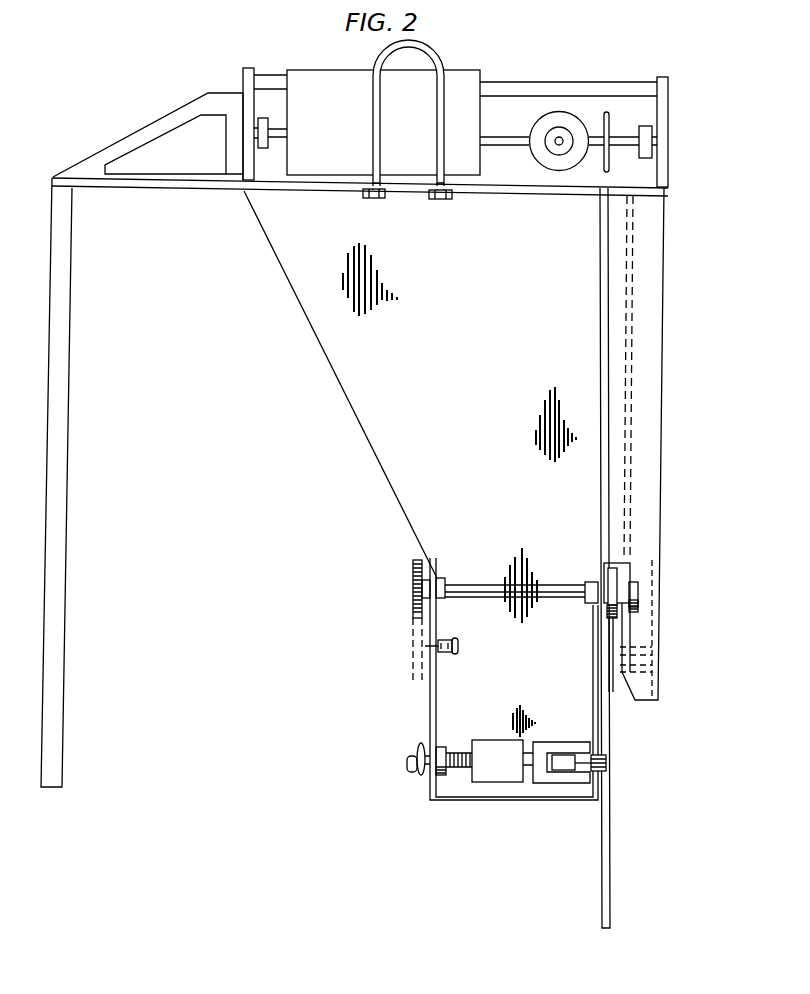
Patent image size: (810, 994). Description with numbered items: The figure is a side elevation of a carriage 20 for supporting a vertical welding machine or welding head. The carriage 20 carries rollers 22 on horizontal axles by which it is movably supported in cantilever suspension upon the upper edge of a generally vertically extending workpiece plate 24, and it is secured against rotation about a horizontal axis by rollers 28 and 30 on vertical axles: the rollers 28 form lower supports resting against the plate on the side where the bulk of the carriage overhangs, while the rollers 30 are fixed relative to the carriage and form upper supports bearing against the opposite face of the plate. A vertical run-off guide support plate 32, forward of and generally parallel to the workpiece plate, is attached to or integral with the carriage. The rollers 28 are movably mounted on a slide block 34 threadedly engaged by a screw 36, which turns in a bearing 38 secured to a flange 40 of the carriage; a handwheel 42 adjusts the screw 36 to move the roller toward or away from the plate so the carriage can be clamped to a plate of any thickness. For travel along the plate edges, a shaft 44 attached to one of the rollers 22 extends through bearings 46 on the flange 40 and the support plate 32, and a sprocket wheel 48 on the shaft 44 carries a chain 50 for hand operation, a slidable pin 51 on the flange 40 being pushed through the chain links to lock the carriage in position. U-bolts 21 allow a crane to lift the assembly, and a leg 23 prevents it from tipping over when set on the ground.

The carriage 20 is at (488, 338).
The U-bolts 21 is at (441, 63).
The rollers 22 is at (614, 581).
The leg 23 is at (47, 545).
The workpiece plate 24 is at (607, 899).
The rollers 28 is at (608, 766).
The rollers 30 is at (650, 660).
The run-off guide support plate 32 is at (630, 408).
The slide block 34 is at (510, 780).
The screw 36 is at (460, 753).
The bearing 38 is at (441, 776).
The flange 40 is at (438, 694).
The handwheel 42 is at (407, 760).
The shaft 44 is at (553, 593).
The bearings 46 is at (441, 581).
The sprocket wheel 48 is at (413, 569).
The chain 50 is at (413, 659).
The slidable pin 51 is at (459, 648).